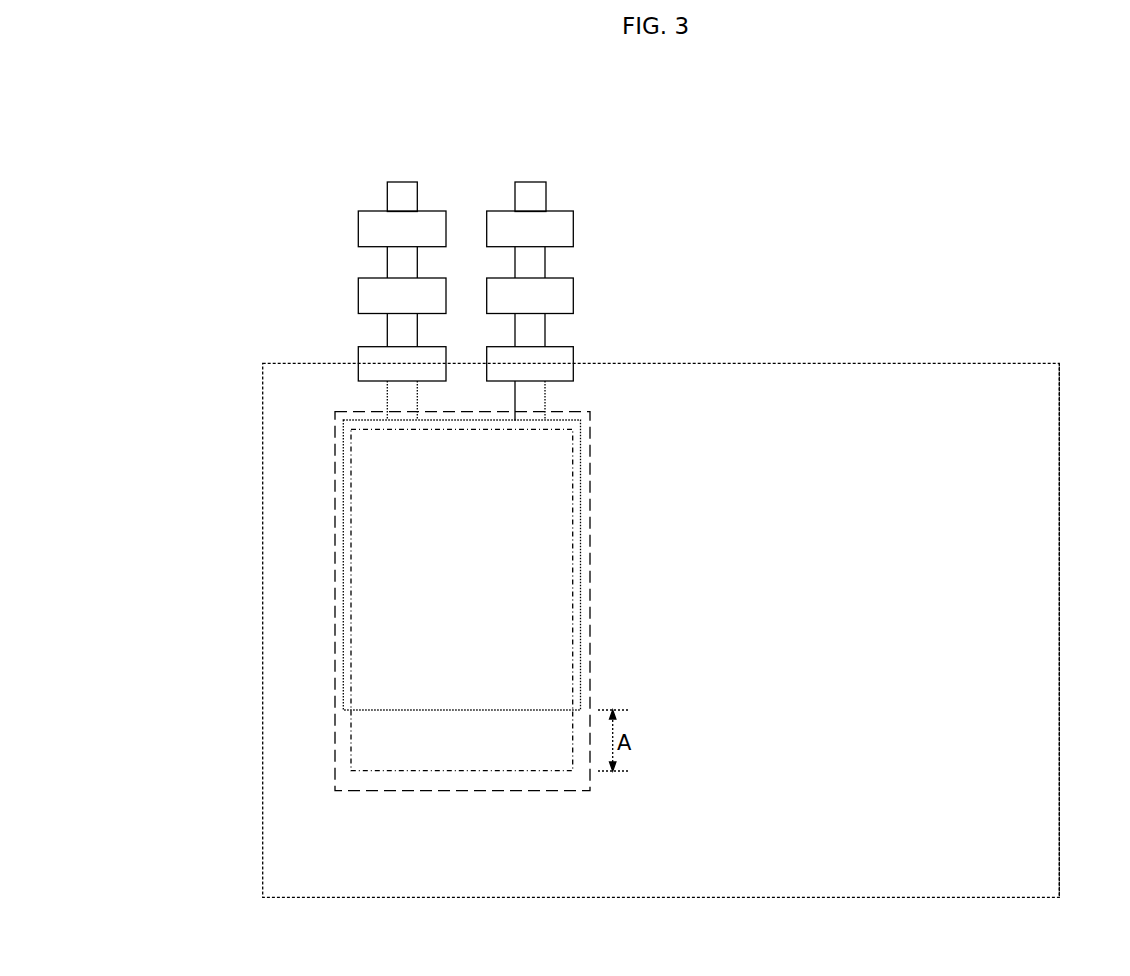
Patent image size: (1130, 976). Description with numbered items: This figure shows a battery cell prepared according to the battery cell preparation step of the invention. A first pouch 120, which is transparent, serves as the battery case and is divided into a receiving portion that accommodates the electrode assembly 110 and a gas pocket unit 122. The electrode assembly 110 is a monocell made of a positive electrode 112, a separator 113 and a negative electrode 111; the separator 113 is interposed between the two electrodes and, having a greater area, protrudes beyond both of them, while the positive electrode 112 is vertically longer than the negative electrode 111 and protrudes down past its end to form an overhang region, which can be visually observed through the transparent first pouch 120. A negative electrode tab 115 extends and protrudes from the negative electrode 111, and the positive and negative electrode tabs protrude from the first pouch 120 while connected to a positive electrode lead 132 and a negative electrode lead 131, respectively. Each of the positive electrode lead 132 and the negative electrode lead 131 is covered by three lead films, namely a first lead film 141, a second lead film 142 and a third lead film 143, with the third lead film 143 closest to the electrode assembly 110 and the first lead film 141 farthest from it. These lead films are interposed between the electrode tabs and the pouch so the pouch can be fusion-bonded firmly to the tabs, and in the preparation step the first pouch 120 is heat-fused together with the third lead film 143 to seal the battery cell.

The electrode assembly 110 is at (215, 680).
The negative electrode 111 is at (343, 653).
The positive electrode 112 is at (363, 726).
The separator 113 is at (343, 770).
The negative electrode tab 115 is at (547, 395).
The first pouch 120 is at (266, 380).
The gas pocket unit 122 is at (1050, 466).
The negative electrode lead 131 is at (545, 197).
The positive electrode lead 132 is at (396, 193).
The first lead film 141 is at (570, 228).
The second lead film 142 is at (362, 298).
The third lead film 143 is at (570, 353).